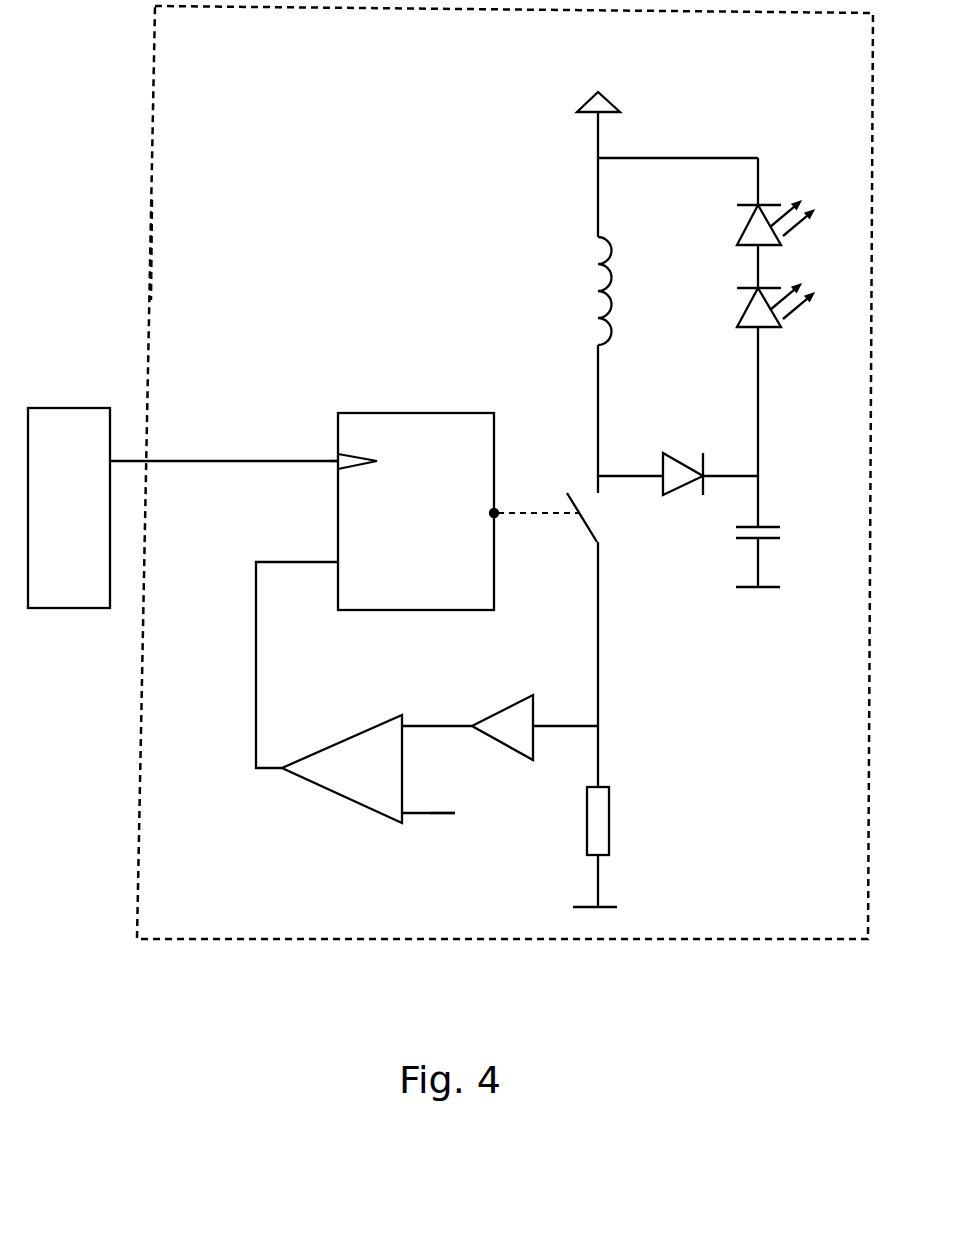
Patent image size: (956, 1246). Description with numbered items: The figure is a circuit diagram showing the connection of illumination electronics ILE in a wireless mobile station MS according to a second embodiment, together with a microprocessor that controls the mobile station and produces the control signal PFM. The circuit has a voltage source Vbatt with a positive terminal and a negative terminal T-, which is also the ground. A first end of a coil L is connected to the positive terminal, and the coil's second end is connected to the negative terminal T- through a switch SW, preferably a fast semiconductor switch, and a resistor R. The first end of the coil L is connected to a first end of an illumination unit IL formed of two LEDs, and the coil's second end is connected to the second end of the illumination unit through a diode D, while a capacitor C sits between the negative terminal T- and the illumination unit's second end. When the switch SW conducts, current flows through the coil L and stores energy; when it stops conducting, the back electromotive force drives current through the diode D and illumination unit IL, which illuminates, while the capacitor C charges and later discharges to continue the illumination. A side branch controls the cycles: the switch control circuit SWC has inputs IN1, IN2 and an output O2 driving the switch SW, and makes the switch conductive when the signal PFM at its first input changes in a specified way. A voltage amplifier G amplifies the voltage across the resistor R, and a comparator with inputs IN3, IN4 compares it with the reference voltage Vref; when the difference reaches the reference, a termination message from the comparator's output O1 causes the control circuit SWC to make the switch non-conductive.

The mobile station MS is at (505, 506).
The illumination electronics ILE is at (152, 248).
The pulse frequency modulation signal PFM is at (243, 445).
The switch control circuit SWC is at (407, 413).
The first input of control circuit IN1 is at (335, 468).
The second input of control circuit IN2 is at (333, 565).
The output of control circuit O2 is at (497, 518).
The output of comparator O1 is at (282, 770).
The comparator input from amplifier IN3 is at (408, 722).
The comparator reference input IN4 is at (407, 817).
The reference voltage Vref is at (467, 815).
The voltage amplifier G is at (535, 727).
The switch SW is at (608, 566).
The voltage source Vbatt is at (667, 151).
The negative terminal T- is at (823, 580).
The coil L is at (587, 291).
The diode D is at (678, 455).
The illumination unit IL is at (792, 233).
The capacitor C is at (772, 552).
The resistor R is at (611, 847).